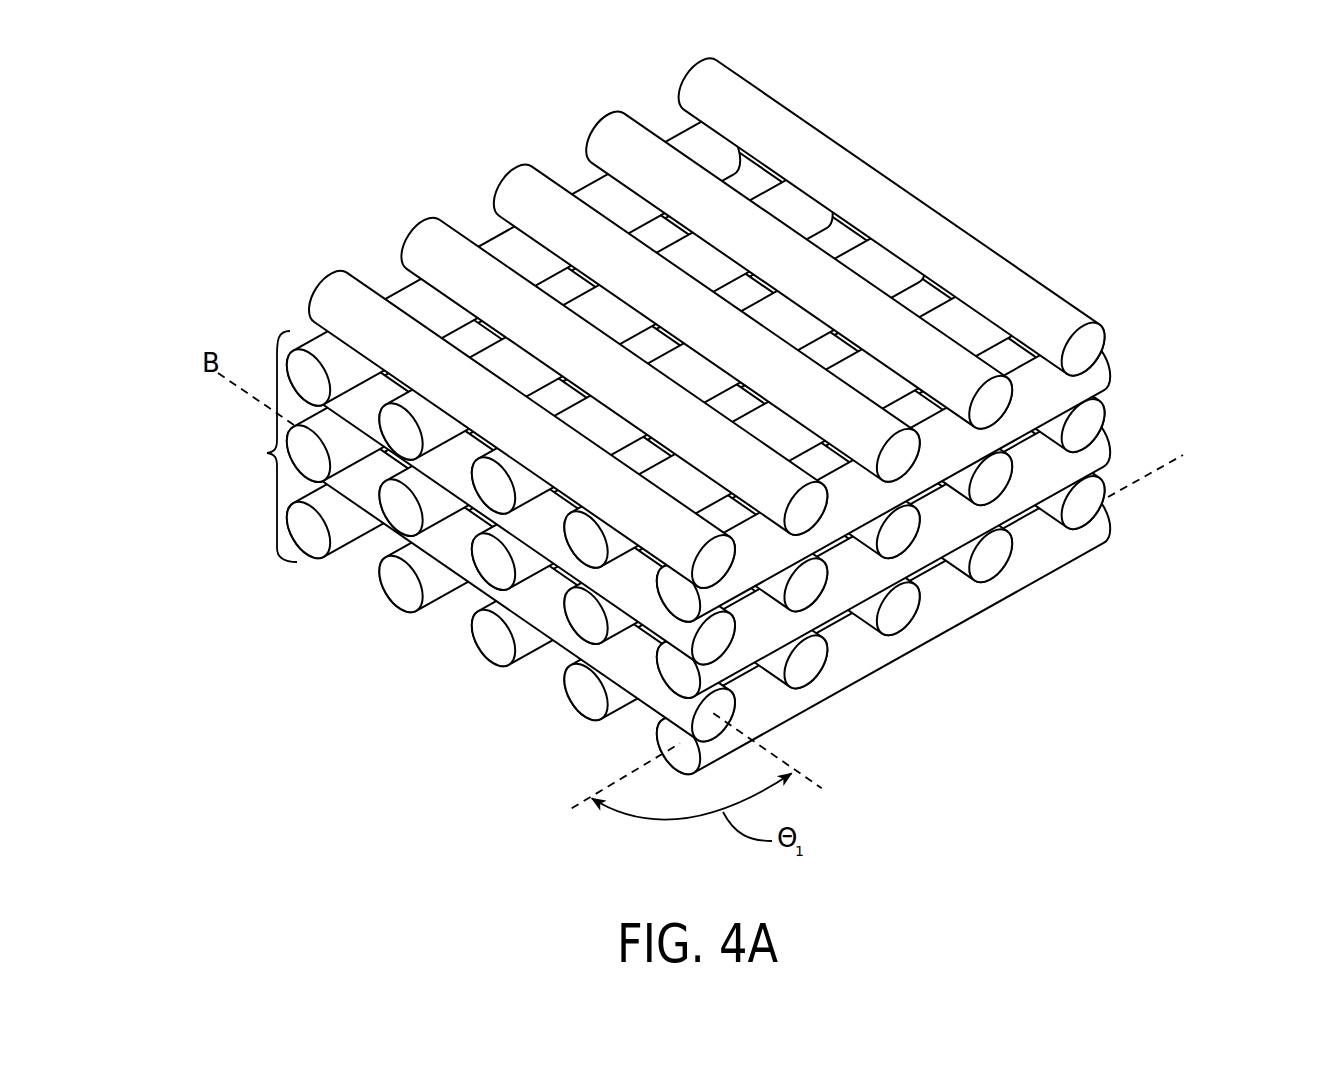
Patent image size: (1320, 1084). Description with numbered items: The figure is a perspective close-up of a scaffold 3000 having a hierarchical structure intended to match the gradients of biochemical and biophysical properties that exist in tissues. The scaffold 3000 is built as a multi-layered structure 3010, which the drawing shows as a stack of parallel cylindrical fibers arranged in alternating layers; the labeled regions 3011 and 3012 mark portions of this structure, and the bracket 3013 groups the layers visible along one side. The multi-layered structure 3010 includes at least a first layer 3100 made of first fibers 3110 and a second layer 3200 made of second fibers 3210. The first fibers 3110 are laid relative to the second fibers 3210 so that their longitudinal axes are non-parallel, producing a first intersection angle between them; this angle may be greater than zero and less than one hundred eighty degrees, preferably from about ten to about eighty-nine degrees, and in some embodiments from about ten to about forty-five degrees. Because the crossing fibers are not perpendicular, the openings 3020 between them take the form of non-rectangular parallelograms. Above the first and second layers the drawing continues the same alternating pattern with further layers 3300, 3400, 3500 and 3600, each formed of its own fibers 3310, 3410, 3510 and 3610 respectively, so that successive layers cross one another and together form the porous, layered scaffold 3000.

The scaffold 3000 is at (771, 415).
The multi-layered structure 3010 is at (295, 637).
The top surface of lattice structure 3011 is at (795, 147).
The second side of lattice structure 3012 is at (465, 650).
The stack of layers 3013 is at (267, 453).
The pore 3020 is at (655, 238).
The first layer 3100 is at (771, 528).
The first fibers 3110 is at (850, 662).
The second layer 3200 is at (773, 485).
The second fibers 3210 is at (922, 548).
The third layer 3300 is at (767, 450).
The rod of third layer 3310 is at (888, 610).
The fourth layer 3400 is at (766, 403).
The rod of fourth layer 3410 is at (988, 482).
The fifth layer 3500 is at (754, 374).
The rod of fifth layer 3510 is at (1032, 392).
The sixth layer 3600 is at (752, 326).
The rod of sixth layer 3610 is at (943, 250).